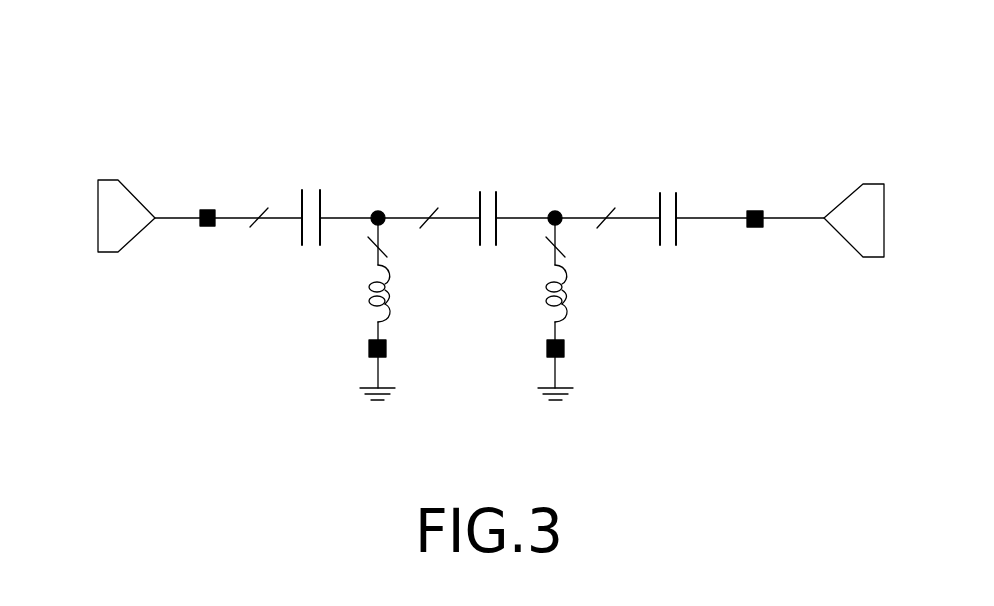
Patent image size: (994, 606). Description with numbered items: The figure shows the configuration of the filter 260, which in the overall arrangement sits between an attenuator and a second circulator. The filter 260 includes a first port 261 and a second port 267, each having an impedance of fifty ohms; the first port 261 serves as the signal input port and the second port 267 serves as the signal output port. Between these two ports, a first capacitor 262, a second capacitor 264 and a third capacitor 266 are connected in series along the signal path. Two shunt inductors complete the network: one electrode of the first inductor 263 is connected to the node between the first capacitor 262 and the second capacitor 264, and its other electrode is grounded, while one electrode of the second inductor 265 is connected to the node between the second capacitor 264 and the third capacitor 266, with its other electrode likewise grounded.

The filter 260 is at (378, 40).
The first port 261 is at (103, 178).
The first capacitor 262 is at (308, 187).
The first inductor 263 is at (368, 290).
The second capacitor 264 is at (486, 188).
The second inductor 265 is at (546, 290).
The third capacitor 266 is at (664, 189).
The second port 267 is at (872, 183).